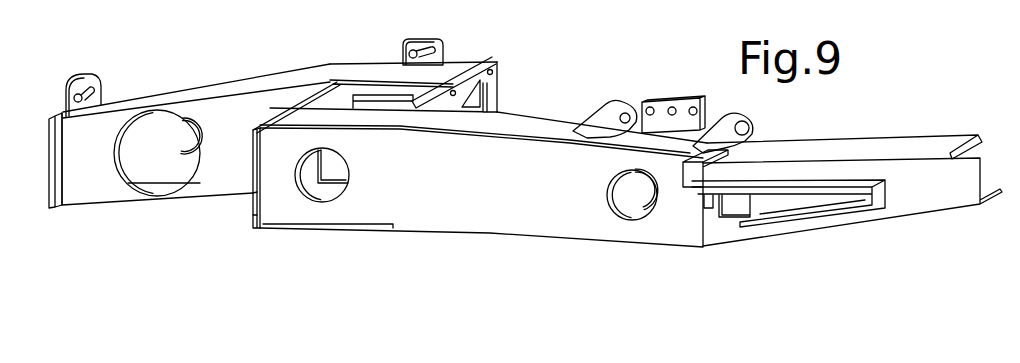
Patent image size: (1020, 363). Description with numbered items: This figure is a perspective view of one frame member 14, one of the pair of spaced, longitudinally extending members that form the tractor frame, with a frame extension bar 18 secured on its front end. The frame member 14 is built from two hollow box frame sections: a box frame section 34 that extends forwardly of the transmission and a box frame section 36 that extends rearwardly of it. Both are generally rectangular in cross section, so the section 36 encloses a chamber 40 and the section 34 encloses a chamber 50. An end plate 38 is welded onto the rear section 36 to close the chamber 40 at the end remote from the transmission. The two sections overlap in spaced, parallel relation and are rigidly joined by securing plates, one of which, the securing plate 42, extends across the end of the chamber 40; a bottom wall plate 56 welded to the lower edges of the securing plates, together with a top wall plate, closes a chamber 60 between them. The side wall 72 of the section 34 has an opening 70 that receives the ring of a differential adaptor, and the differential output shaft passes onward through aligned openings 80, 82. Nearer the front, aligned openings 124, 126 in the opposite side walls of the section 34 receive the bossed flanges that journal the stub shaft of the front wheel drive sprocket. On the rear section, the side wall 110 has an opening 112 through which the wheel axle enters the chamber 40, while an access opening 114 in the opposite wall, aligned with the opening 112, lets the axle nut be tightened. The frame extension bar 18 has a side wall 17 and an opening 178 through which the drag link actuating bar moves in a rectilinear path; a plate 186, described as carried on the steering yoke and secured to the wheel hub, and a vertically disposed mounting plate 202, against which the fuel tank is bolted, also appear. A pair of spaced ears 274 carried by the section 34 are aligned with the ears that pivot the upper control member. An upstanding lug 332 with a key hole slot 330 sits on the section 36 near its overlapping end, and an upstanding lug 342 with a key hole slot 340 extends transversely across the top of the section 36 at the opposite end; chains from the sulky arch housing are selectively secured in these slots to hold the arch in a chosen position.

The frame member 14 is at (312, 67).
The side wall 17 is at (939, 188).
The frame extension bar 18 is at (935, 207).
The box frame section 34 is at (253, 216).
The box frame section 36 is at (188, 90).
The end plate 38 is at (48, 140).
The chamber 40 is at (143, 177).
The securing plate 42 is at (493, 102).
The chamber 50 is at (623, 210).
The bottom wall plate 56 is at (310, 229).
The chamber 60 is at (333, 100).
The opening 70 is at (300, 189).
The side wall 72 is at (494, 186).
The opening 80 is at (333, 180).
The opening 82 is at (452, 66).
The side wall 110 is at (150, 153).
The opening 112 is at (168, 130).
The access opening 114 is at (117, 177).
The opening 124 is at (650, 206).
The opening 126 is at (607, 194).
The opening 178 is at (707, 213).
The plate 186 is at (732, 220).
The mounting plate 202 is at (712, 102).
The spaced ears 274 is at (615, 103).
The key hole slot 330 is at (437, 42).
The upstanding lug 332 is at (413, 40).
The key hole slot 340 is at (93, 90).
The upstanding lug 342 is at (82, 76).